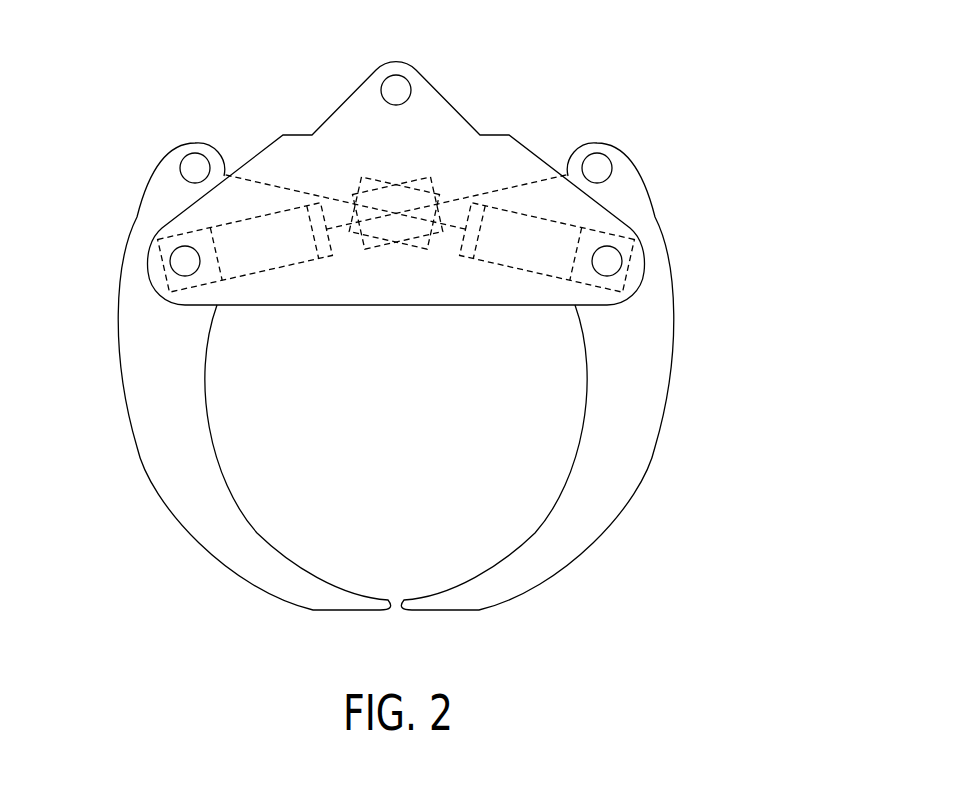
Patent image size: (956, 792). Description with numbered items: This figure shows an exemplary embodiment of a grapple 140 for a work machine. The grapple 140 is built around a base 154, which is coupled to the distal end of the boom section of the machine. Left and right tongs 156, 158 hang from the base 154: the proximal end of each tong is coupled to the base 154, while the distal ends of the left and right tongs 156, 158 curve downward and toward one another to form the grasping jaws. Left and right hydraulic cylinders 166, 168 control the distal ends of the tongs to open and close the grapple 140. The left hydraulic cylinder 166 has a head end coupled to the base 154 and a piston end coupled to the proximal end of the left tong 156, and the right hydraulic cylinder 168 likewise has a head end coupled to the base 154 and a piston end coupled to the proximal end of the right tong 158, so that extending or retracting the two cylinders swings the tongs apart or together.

The grapple 140 is at (744, 90).
The base 154 is at (265, 149).
The left tong 156 is at (133, 397).
The right tong 158 is at (657, 414).
The left hydraulic cylinder 166 is at (549, 277).
The right hydraulic cylinder 168 is at (243, 277).